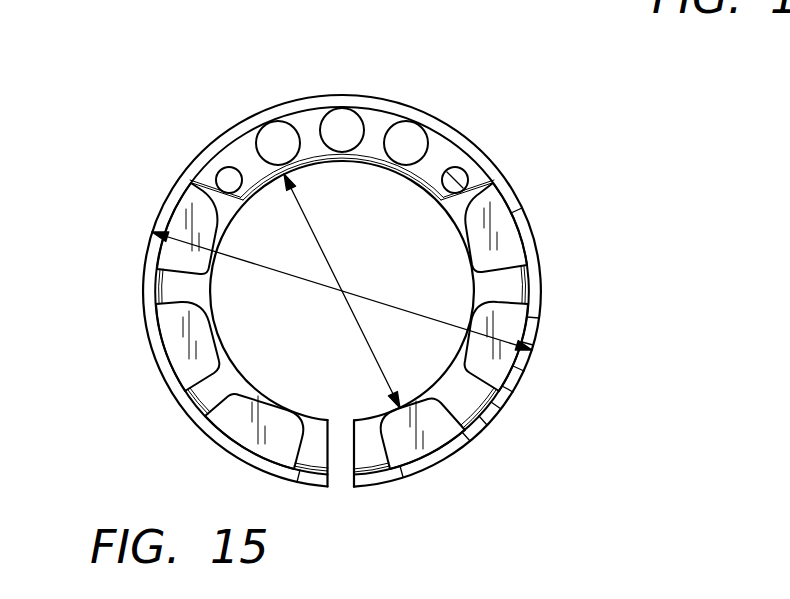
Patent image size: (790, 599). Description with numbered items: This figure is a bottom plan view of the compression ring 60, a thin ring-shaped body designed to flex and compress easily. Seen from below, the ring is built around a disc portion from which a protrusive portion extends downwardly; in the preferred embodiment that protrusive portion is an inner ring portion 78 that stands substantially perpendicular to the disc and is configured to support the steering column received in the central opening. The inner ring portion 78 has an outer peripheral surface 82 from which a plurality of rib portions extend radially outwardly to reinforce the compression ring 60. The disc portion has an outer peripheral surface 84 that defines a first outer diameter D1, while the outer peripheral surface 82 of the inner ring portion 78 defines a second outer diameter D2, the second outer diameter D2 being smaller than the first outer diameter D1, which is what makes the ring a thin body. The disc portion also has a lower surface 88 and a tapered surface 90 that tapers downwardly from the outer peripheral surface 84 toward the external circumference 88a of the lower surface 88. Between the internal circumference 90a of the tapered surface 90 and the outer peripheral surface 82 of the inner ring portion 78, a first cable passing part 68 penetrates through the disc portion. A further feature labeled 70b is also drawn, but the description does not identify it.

The compression ring 60 is at (588, 377).
The first cable passing part 68 is at (406, 143).
The spring strip 70b is at (486, 172).
The inner ring portion 78 is at (229, 181).
The outer peripheral surface of the inner ring portion 82 is at (466, 219).
The outer peripheral surface of the disc portion 84 is at (541, 287).
The lower surface 88 is at (436, 163).
The external circumference of the lower surface 88a is at (455, 180).
The tapered surface 90 is at (491, 172).
The internal circumference of the tapered surface 90a is at (248, 131).
The first outer diameter D1 is at (151, 238).
The second outer diameter D2 is at (391, 387).